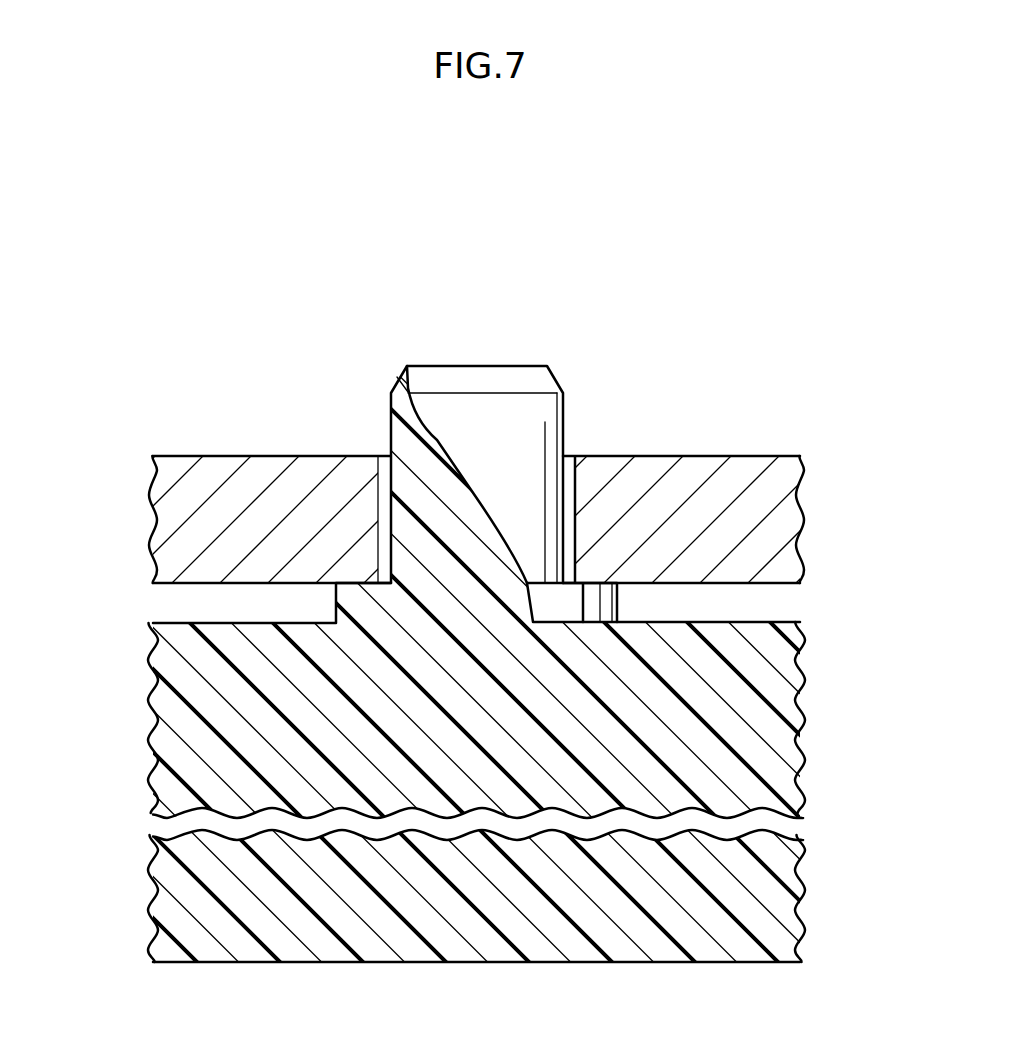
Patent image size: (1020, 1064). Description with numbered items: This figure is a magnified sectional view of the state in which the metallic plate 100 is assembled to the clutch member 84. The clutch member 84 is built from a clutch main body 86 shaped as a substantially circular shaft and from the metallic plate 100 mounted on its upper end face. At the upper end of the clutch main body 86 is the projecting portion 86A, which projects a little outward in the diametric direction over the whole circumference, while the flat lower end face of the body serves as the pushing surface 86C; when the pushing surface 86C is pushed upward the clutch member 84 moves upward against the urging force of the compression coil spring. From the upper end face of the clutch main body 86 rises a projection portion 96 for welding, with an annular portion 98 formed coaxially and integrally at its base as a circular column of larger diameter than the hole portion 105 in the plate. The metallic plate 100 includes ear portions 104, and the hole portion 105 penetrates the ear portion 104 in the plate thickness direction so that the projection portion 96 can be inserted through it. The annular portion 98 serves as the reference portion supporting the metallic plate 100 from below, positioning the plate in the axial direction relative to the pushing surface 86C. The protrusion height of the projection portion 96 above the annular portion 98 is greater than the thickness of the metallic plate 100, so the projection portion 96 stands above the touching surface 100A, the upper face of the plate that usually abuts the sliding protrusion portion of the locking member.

The clutch member 84 is at (747, 291).
The clutch main body 86 is at (811, 841).
The projecting portion 86A is at (170, 650).
The pushing surface 86C is at (510, 962).
The projection portion 96 is at (473, 410).
The annular portion 98 is at (618, 603).
The metallic plate 100 is at (748, 446).
The touching surface 100A is at (212, 455).
The ear portion 104 is at (306, 480).
The hole portion 105 is at (571, 496).